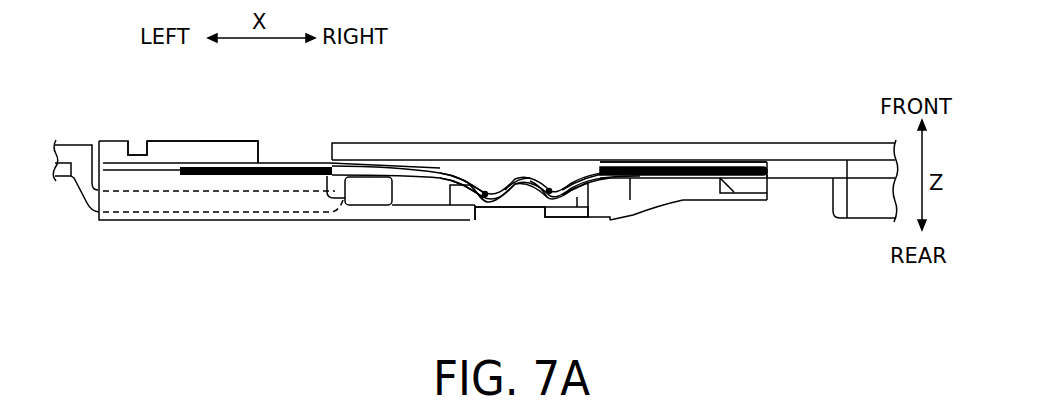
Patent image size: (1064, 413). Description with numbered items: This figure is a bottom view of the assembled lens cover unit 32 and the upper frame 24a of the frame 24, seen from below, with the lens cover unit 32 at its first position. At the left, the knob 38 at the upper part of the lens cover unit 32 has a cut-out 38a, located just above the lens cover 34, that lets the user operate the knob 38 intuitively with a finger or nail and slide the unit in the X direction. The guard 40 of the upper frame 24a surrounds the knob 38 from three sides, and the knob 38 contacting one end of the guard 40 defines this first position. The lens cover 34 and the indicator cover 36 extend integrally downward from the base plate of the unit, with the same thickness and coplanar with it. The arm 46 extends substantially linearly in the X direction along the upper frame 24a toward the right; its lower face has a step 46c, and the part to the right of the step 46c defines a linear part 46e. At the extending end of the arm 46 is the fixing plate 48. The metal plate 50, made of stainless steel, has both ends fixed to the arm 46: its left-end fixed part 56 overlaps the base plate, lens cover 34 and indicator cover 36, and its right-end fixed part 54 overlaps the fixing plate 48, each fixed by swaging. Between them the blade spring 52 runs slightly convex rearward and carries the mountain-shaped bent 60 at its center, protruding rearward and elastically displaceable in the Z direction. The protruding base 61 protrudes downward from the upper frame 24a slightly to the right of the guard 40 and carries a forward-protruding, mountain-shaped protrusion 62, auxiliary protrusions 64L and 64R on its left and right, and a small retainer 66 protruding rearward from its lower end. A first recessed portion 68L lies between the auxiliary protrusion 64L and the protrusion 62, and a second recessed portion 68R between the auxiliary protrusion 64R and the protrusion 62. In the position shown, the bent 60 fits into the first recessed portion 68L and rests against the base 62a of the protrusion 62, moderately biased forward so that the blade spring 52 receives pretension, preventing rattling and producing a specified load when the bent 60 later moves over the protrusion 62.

The frame 24 is at (684, 160).
The upper frame 24a is at (683, 104).
The lens cover unit 32 is at (270, 183).
The lens cover 34 is at (128, 172).
The indicator cover 36 is at (307, 178).
The knob 38 is at (185, 139).
The cut-out 38a is at (137, 140).
The guard 40 is at (90, 208).
The arm 46 is at (436, 206).
The step 46c is at (484, 210).
The linear part 46e is at (503, 217).
The fixing plate 48 is at (752, 193).
The metal plate 50 is at (617, 160).
The blade spring 52 is at (398, 164).
The right-end fixed part 54 is at (751, 178).
The left-end fixed part 56 is at (225, 139).
The bent 60 is at (483, 190).
The protruding base 61 is at (584, 198).
The protrusion 62 is at (522, 177).
The base 62a is at (502, 186).
The auxiliary protrusion 64L is at (460, 178).
The auxiliary protrusion 64R is at (586, 180).
The retainer 66 is at (560, 212).
The first recessed portion 68L is at (489, 206).
The second recessed portion 68R is at (535, 207).